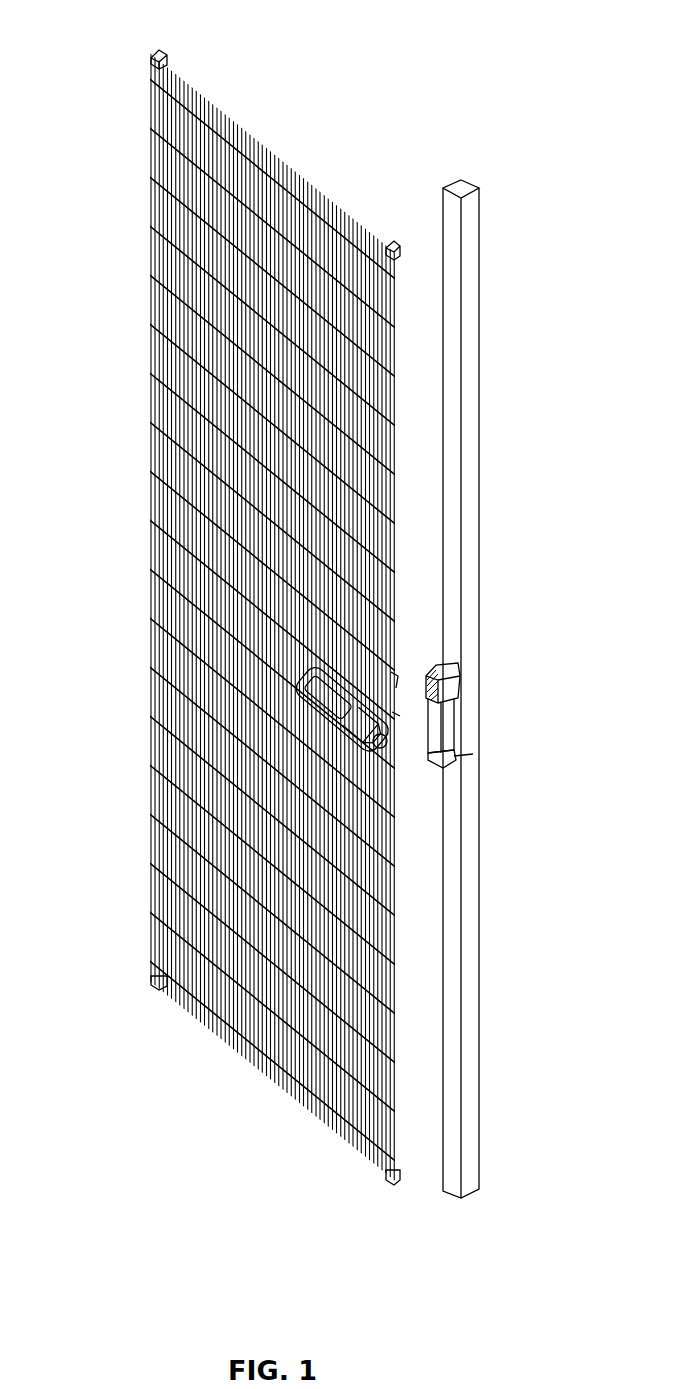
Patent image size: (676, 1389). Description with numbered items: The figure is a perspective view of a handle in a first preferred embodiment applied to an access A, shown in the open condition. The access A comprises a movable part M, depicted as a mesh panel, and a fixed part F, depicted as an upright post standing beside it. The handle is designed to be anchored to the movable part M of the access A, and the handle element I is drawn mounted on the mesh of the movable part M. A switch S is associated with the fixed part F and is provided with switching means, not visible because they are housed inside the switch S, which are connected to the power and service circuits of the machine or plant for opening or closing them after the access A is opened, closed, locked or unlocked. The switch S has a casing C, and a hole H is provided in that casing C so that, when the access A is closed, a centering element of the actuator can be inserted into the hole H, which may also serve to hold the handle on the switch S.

The access A is at (374, 183).
The movable part M is at (148, 256).
The fixed part F is at (458, 308).
The insert / mesh clip I is at (292, 698).
The hole H is at (433, 698).
The switch S is at (446, 711).
The casing C is at (453, 745).